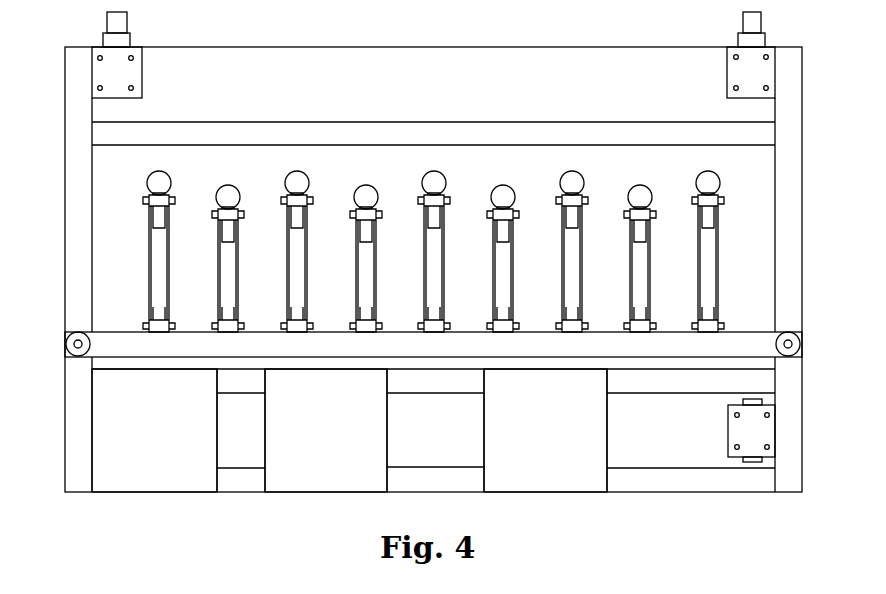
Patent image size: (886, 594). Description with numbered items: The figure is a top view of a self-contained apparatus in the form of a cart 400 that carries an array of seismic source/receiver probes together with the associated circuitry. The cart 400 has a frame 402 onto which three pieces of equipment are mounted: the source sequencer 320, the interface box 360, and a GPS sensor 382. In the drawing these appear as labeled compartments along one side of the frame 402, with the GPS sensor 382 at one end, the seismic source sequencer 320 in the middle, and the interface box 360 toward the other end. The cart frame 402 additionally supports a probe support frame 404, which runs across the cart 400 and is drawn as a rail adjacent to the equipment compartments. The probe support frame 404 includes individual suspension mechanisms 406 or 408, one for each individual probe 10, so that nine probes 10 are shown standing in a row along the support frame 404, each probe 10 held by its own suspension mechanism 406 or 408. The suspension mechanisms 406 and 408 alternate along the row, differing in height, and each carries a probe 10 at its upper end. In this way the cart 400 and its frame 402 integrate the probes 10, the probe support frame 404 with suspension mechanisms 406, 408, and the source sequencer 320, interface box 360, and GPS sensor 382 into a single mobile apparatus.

The probe 10 is at (152, 185).
The cart 400 is at (49, 489).
The frame 402 is at (76, 422).
The probe support frame 404 is at (118, 341).
The suspension mechanism 406 is at (449, 262).
The suspension mechanism 408 is at (451, 269).
The GPS sensor 382 is at (157, 463).
The source sequencer 320 is at (345, 467).
The interface box 360 is at (580, 467).